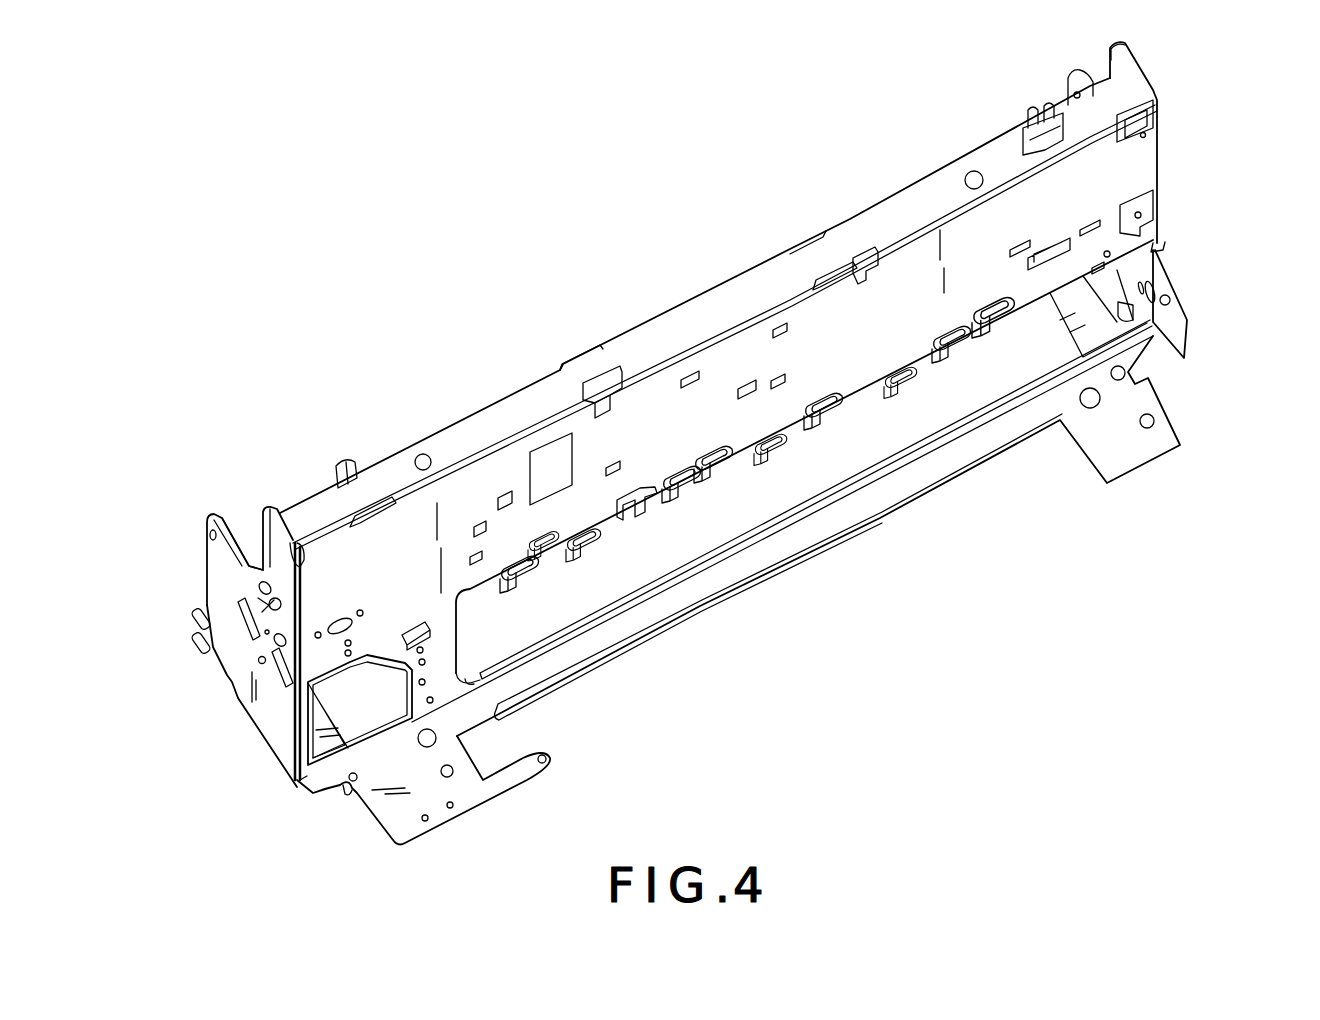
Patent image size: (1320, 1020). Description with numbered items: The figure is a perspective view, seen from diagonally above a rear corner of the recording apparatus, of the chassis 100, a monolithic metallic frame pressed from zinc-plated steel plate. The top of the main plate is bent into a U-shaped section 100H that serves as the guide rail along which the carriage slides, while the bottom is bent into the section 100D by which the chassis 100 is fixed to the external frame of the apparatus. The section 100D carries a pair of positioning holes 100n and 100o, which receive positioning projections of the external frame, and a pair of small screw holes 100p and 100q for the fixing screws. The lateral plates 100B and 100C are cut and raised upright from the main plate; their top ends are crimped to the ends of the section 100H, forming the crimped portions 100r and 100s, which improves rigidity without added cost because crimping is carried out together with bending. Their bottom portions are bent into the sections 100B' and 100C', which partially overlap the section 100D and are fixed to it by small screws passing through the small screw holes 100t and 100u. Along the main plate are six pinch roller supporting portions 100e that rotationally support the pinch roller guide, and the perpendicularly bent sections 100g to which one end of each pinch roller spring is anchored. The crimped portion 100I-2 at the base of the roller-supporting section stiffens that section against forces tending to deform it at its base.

The chassis 100 is at (993, 619).
The guide rail section 100H is at (665, 330).
The crimped portion 100s is at (1163, 88).
The lateral plate 100C is at (1219, 291).
The bent bottom section of lateral plate 100C 100C' is at (1170, 313).
The small screw hole 100u is at (1127, 379).
The positioning hole 100o is at (1089, 409).
The small screw hole 100q is at (1153, 427).
The crimped portion 100r is at (285, 537).
The lateral plate 100B is at (203, 647).
The bent bottom section of lateral plate 100B 100B' is at (283, 724).
The small screw hole 100t is at (343, 796).
The positioning hole 100n is at (428, 748).
The small screw hole 100p is at (452, 774).
The bottom section 100D is at (473, 712).
The crimped portion 100I-2 is at (478, 652).
The pinch roller supporting portion 100e is at (580, 563).
The spring anchoring section 100g is at (690, 492).